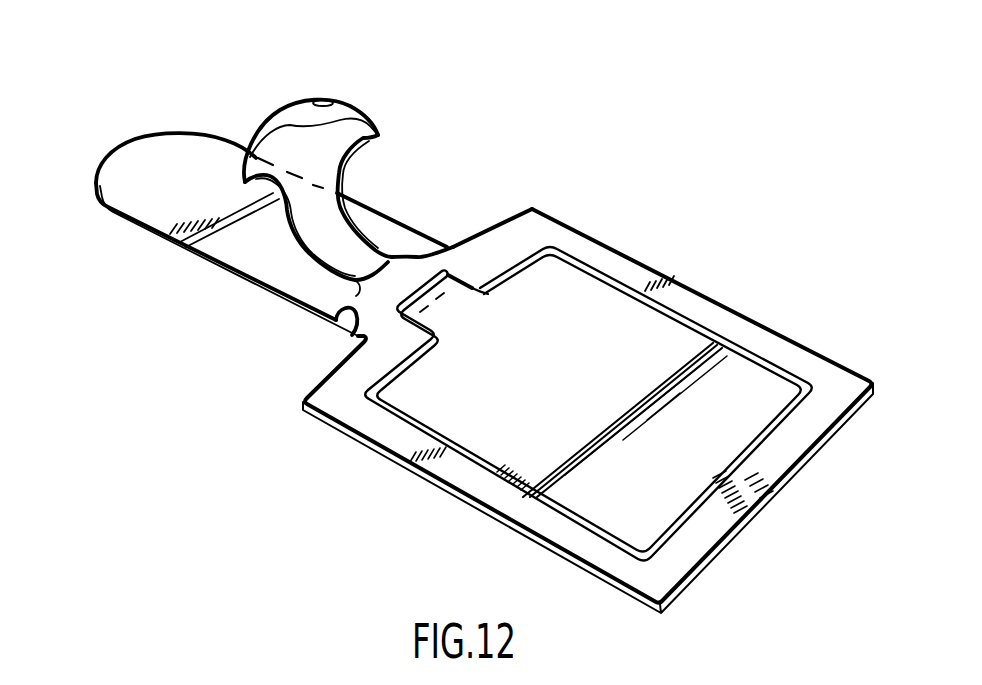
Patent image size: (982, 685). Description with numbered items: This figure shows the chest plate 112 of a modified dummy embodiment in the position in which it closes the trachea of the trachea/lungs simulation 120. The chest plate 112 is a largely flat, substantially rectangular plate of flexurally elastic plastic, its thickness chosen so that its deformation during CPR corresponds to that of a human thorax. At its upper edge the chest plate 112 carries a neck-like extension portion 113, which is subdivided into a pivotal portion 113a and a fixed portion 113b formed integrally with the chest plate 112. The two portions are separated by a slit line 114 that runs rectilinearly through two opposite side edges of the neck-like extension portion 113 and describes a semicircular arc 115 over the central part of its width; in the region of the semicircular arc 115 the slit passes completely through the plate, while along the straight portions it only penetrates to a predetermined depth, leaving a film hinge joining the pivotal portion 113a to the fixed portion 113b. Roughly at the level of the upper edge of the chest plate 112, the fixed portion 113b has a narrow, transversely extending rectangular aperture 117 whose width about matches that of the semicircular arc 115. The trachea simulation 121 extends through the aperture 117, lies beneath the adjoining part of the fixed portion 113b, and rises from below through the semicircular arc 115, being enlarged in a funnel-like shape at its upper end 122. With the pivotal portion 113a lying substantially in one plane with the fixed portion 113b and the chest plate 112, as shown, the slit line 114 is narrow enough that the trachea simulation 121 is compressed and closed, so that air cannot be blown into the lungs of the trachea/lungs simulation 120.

The chest plate 112 is at (557, 187).
The neck-like extension portion 113 is at (197, 112).
The pivotal portion 113a is at (237, 276).
The fixed portion 113b is at (455, 248).
The slit line 114 is at (348, 333).
The semicircular arc 115 is at (360, 278).
The aperture 117 is at (468, 287).
The trachea/lungs simulation 120 is at (633, 297).
The trachea simulation 121 is at (250, 258).
The upper end 122 is at (334, 102).